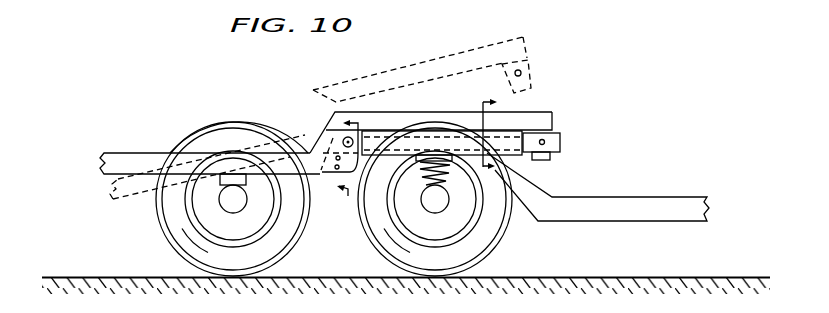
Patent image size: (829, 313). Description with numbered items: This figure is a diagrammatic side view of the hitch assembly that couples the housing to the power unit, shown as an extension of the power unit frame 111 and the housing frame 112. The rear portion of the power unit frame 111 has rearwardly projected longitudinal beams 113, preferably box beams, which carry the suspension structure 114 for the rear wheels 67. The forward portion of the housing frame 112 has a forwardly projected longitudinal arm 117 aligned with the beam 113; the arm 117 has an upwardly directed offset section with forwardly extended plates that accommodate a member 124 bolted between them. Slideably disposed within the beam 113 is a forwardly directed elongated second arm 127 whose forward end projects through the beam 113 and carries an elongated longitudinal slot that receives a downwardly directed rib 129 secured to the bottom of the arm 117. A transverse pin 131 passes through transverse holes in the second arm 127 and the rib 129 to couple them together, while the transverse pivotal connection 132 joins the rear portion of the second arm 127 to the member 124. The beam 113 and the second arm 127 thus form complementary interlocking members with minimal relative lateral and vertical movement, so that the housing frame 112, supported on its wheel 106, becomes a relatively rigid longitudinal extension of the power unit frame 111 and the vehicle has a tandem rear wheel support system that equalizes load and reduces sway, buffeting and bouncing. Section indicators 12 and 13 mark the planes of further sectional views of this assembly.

The front wheel 106 is at (177, 228).
The rear wheels 67 is at (484, 238).
The power unit frame 111 is at (622, 196).
The housing frame 112 is at (146, 156).
The longitudinal beams 113 is at (445, 143).
The suspension structure 114 is at (409, 212).
The longitudinal arm 117 is at (418, 120).
The member 124 is at (342, 146).
The second arm 127 is at (554, 133).
The rib 129 is at (552, 153).
The transverse pin 131 is at (545, 142).
The transverse pivotal connection 132 is at (340, 137).
The section line 12- 12 is at (349, 161).
The section line 13- 13 is at (505, 132).